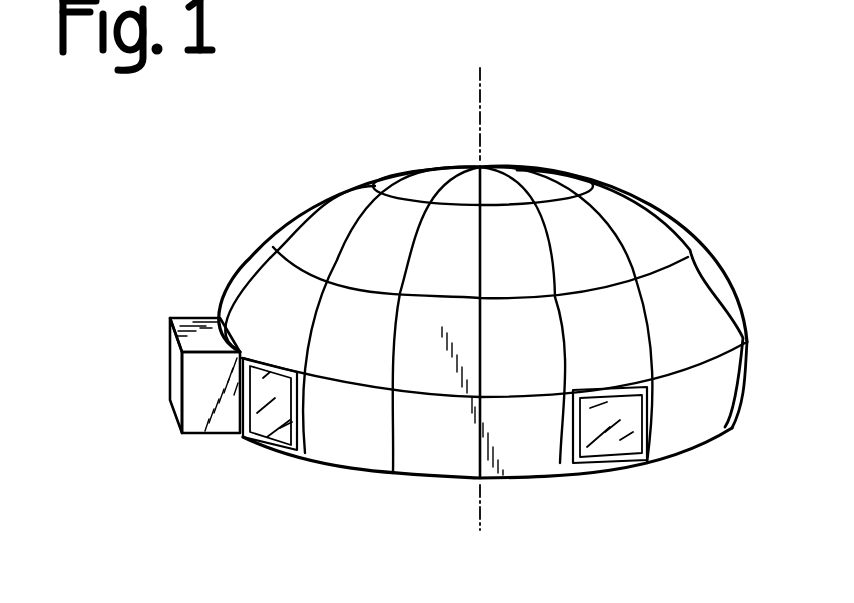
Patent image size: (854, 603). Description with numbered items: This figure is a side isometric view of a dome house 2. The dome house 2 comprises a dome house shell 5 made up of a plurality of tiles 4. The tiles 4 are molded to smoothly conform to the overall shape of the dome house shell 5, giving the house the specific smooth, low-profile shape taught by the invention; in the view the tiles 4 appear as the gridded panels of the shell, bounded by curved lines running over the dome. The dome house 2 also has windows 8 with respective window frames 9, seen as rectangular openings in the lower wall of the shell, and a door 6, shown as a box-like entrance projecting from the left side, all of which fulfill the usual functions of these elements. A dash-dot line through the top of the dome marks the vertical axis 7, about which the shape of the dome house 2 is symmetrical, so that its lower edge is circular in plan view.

The dome house 2 is at (694, 61).
The tiles 4 is at (698, 323).
The dome house shell 5 is at (335, 227).
The door 6 is at (177, 362).
The vertical axis 7 is at (480, 112).
The windows 8 is at (260, 442).
The window frames 9 is at (279, 447).